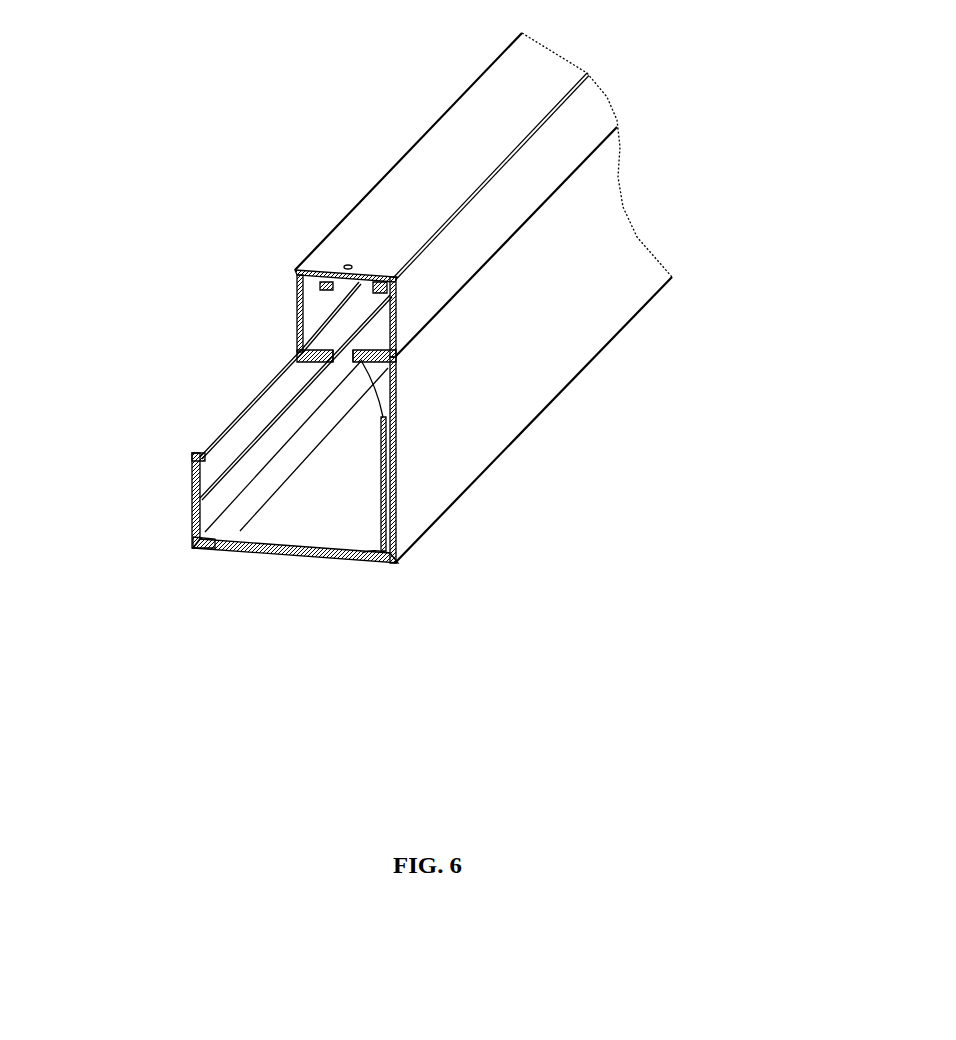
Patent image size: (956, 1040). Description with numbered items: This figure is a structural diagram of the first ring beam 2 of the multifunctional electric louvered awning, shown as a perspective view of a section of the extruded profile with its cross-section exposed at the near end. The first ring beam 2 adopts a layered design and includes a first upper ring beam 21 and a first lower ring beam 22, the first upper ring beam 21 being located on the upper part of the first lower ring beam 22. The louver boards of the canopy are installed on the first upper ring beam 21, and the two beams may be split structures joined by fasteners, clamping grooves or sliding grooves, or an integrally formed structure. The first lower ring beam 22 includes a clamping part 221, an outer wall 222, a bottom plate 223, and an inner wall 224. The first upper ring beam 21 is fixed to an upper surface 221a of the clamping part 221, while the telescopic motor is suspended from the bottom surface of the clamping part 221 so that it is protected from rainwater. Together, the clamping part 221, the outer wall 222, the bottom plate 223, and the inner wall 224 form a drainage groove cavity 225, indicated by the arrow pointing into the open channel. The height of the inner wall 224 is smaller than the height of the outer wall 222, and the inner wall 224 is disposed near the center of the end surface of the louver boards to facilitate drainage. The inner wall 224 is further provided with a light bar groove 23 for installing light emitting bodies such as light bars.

The first ring beam 2 is at (227, 195).
The first upper ring beam 21 is at (463, 207).
The first lower ring beam 22 is at (560, 392).
The clamping part 221 is at (320, 366).
The upper surface 221a is at (328, 352).
The outer wall 222 is at (383, 444).
The bottom plate 223 is at (319, 508).
The inner wall 224 is at (210, 548).
The drainage groove cavity 225 is at (300, 476).
The light bar groove 23 is at (198, 470).